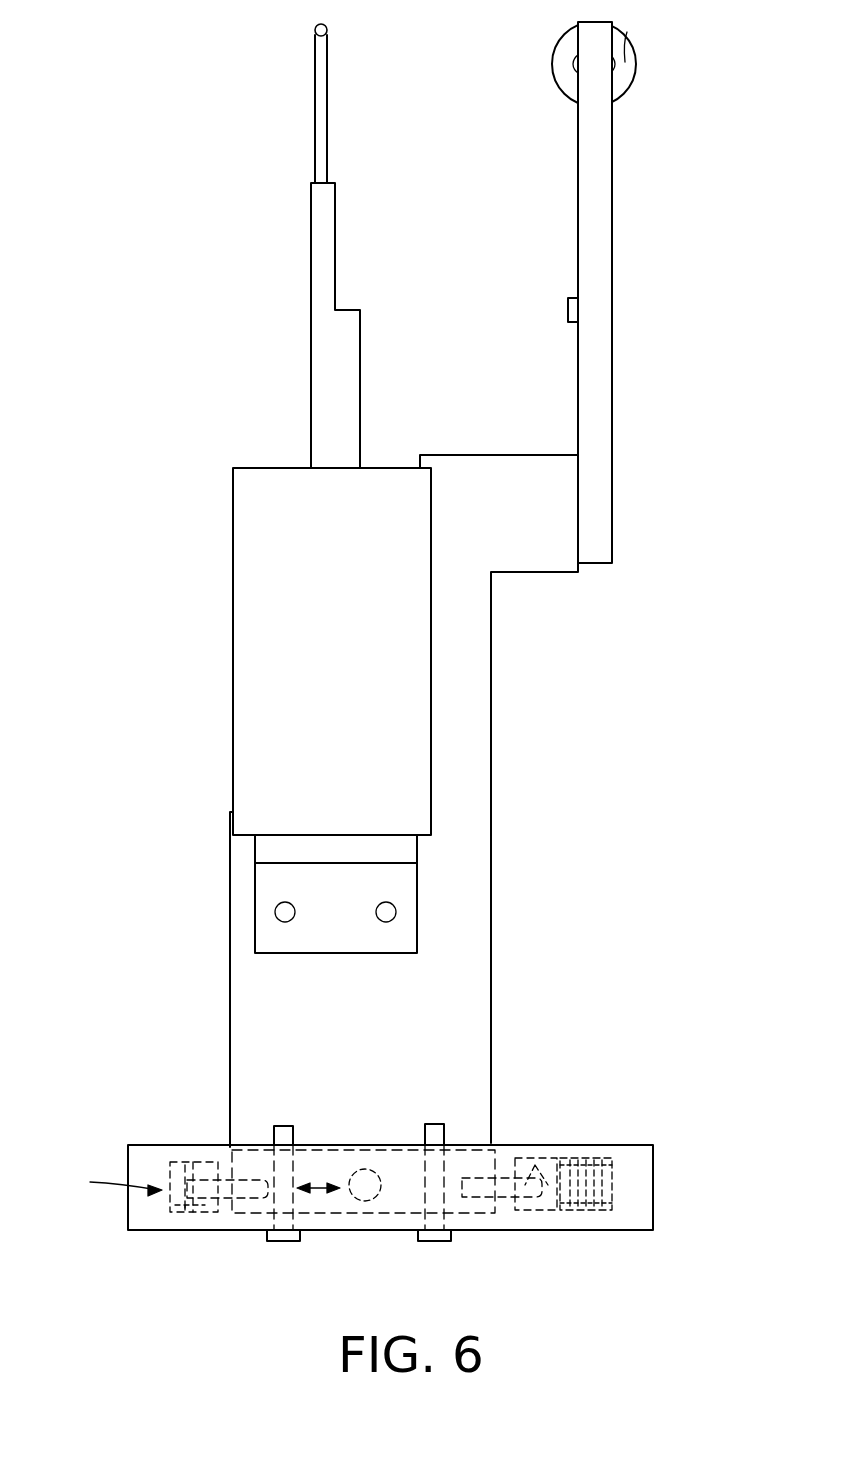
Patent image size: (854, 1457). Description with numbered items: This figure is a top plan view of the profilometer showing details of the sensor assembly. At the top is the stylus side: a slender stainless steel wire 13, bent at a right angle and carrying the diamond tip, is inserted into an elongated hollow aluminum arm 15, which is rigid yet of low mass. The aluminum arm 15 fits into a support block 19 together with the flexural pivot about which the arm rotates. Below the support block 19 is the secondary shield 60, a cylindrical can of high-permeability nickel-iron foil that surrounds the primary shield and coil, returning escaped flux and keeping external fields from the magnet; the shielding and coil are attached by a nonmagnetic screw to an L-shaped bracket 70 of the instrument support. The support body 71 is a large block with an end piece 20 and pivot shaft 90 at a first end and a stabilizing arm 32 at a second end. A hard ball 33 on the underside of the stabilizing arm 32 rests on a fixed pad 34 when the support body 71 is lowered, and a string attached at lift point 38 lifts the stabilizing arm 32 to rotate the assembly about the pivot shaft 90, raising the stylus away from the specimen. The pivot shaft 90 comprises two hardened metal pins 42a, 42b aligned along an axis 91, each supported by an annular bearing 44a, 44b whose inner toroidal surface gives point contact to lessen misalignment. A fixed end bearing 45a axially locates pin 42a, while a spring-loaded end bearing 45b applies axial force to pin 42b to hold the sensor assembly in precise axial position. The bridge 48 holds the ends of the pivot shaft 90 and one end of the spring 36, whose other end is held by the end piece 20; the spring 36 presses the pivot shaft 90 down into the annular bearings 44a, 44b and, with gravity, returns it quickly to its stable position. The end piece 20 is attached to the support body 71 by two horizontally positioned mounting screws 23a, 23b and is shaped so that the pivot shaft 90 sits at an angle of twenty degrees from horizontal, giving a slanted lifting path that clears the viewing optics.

The stainless steel wire 13 is at (315, 30).
The aluminum arm 15 is at (318, 118).
The support block 19 is at (313, 372).
The end piece 20 is at (378, 1233).
The mounting screw 23a is at (278, 1242).
The mounting screw 23b is at (432, 1242).
The stabilizing arm 32 is at (605, 214).
The hard ball 33 is at (627, 32).
The pad 34 is at (630, 70).
The spring 36 is at (352, 1175).
The lift point 38 is at (568, 300).
The hardened metal pin 42a is at (236, 1215).
The hardened metal pin 42b is at (512, 1205).
The annular bearing 44a is at (197, 1162).
The annular bearing 44b is at (532, 1170).
The fixed end bearing 45a is at (170, 1152).
The spring-loaded end bearing 45b is at (560, 1150).
The bridge 48 is at (149, 1232).
The secondary shield 60 is at (233, 605).
The L-shaped bracket 70 is at (275, 937).
The support body 71 is at (491, 982).
The pivot shaft 90 is at (108, 1182).
The axis 91 is at (320, 1193).